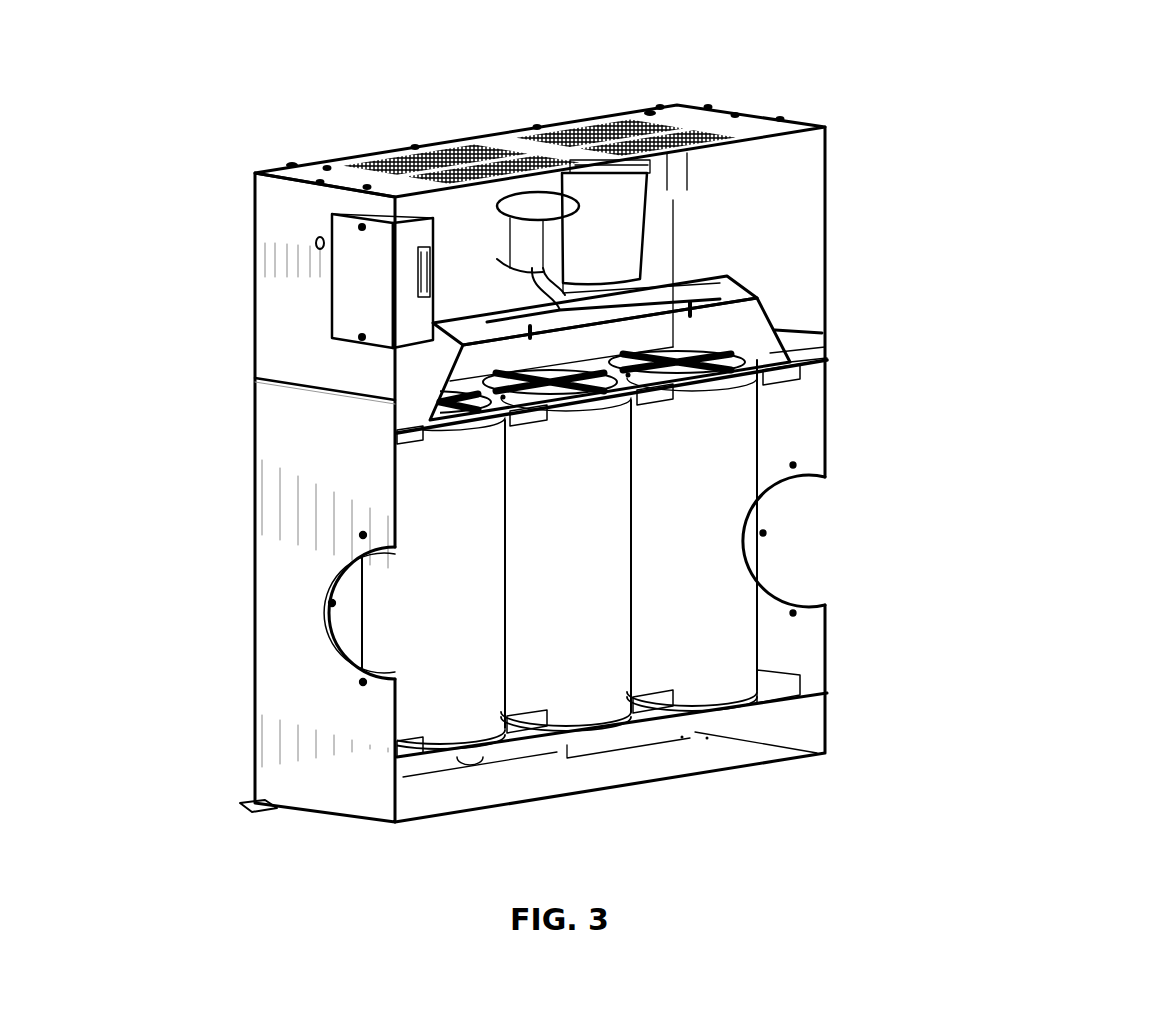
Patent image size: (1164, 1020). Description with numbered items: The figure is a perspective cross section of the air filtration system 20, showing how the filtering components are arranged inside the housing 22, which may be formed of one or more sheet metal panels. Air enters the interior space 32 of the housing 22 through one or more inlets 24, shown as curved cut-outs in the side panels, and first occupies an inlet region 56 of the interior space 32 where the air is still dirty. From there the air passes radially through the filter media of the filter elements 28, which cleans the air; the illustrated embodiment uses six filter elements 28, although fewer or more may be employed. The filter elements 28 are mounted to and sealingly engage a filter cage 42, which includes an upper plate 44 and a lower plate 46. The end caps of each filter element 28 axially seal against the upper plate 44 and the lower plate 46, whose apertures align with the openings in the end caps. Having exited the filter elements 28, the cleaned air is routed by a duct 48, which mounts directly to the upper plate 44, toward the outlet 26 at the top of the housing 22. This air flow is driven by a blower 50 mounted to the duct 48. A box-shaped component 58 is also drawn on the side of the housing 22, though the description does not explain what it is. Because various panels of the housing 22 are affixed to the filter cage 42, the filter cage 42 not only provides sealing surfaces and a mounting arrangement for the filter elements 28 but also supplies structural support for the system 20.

The system 20 is at (1040, 125).
The housing 22 is at (290, 433).
The inlet 24 is at (347, 578).
The outlet 26 is at (695, 118).
The filter element 28 is at (480, 637).
The interior space 32 is at (805, 631).
The filter cage 42 is at (805, 432).
The upper plate 44 is at (812, 365).
The lower plate 46 is at (803, 690).
The duct 48 is at (770, 313).
The blower 50 is at (677, 282).
The inlet region 56 is at (372, 634).
The control box 58 is at (460, 268).